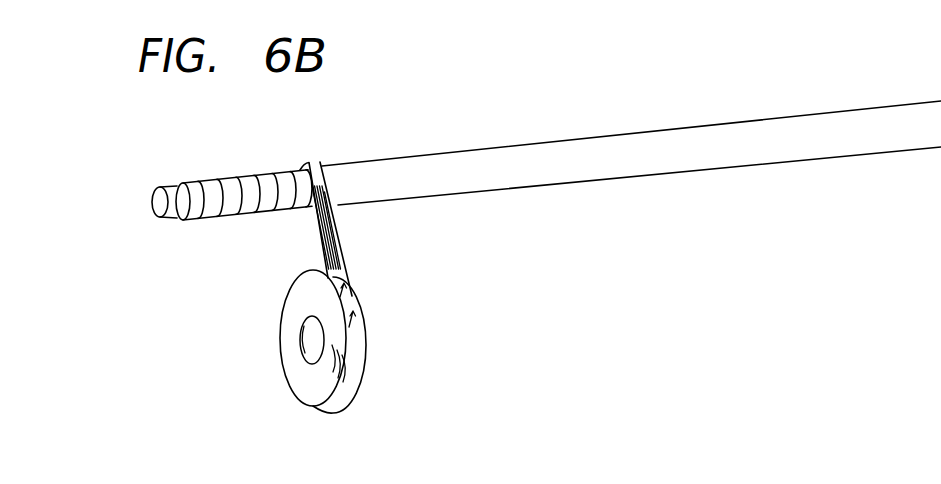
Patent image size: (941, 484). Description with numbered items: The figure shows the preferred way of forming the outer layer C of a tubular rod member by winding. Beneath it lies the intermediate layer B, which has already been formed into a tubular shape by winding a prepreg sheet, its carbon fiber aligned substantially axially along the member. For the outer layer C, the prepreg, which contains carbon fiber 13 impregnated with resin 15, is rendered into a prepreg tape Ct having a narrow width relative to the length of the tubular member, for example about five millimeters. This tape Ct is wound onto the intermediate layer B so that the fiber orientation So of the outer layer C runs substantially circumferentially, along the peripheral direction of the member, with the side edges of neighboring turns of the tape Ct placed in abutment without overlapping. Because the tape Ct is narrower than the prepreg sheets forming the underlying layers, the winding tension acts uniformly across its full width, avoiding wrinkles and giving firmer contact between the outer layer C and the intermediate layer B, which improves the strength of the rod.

The outer layer C is at (317, 163).
The intermediate layer B is at (733, 160).
The carbon fiber 13 is at (317, 222).
The resin 15 is at (319, 237).
The prepreg tape Ct is at (340, 250).
The fiber orientation of the outer layer So is at (353, 308).